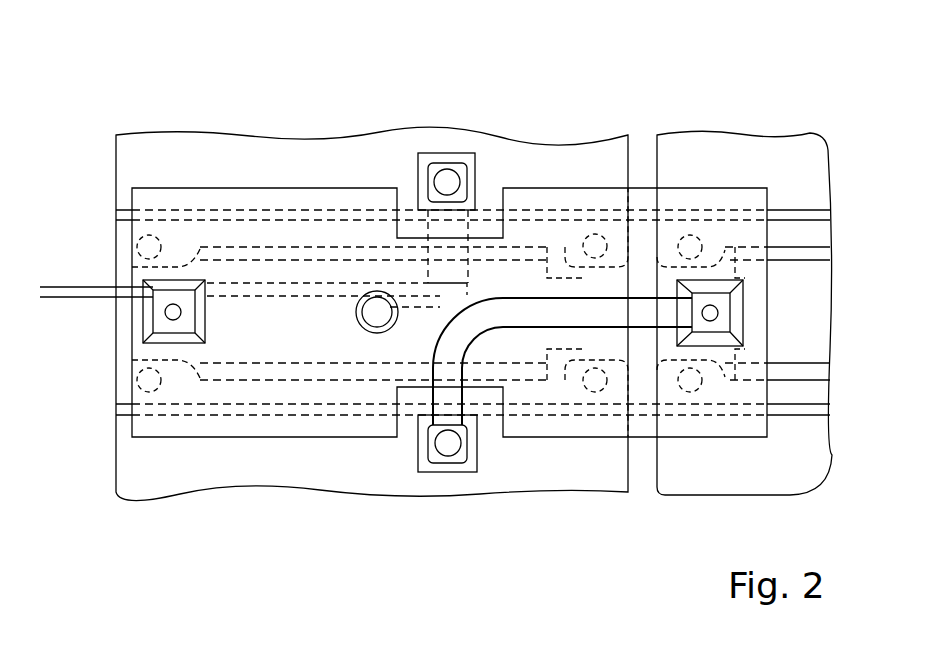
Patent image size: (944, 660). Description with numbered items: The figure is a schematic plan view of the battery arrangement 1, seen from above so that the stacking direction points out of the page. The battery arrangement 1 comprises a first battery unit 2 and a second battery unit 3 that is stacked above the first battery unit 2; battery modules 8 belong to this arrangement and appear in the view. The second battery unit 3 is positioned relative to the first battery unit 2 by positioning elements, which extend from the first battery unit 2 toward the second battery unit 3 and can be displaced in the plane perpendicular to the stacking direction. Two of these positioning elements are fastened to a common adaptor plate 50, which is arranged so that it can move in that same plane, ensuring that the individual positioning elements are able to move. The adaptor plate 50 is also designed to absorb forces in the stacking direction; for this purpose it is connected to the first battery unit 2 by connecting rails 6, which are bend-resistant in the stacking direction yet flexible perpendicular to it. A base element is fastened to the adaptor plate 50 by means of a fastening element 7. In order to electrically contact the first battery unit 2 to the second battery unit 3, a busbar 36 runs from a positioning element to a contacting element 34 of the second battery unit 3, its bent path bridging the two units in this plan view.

The battery arrangement 1 is at (106, 110).
The first battery unit 2 is at (765, 106).
The second battery unit 3 is at (534, 533).
The connecting rail 6 is at (469, 270).
The fastening element 7 is at (375, 333).
The battery module 8 is at (178, 153).
The contacting element 34 is at (463, 453).
The busbar 36 is at (566, 303).
The adaptor plate 50 is at (132, 212).